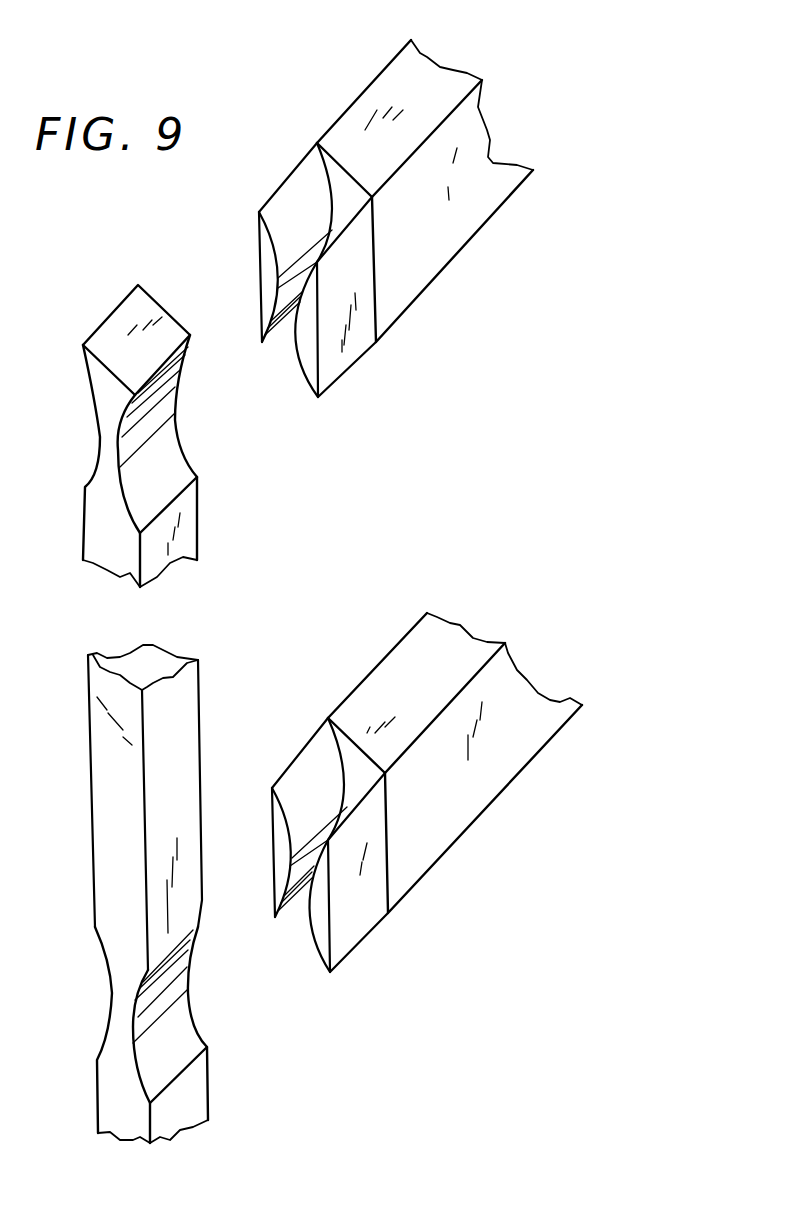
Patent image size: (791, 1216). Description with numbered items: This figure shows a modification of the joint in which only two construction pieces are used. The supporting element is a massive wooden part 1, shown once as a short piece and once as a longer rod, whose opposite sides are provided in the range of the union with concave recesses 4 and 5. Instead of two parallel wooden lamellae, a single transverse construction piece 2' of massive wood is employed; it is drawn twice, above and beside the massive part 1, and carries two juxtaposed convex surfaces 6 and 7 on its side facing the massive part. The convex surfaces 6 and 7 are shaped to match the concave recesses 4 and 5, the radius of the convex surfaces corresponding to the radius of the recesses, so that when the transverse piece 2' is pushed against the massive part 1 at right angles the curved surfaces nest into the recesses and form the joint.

The massive wooden part 1 is at (100, 752).
The transverse construction piece 2' is at (449, 476).
The concave recess 4 is at (98, 423).
The concave recess 5 is at (170, 430).
The convex surface 6 is at (297, 185).
The convex surface 7 is at (350, 350).